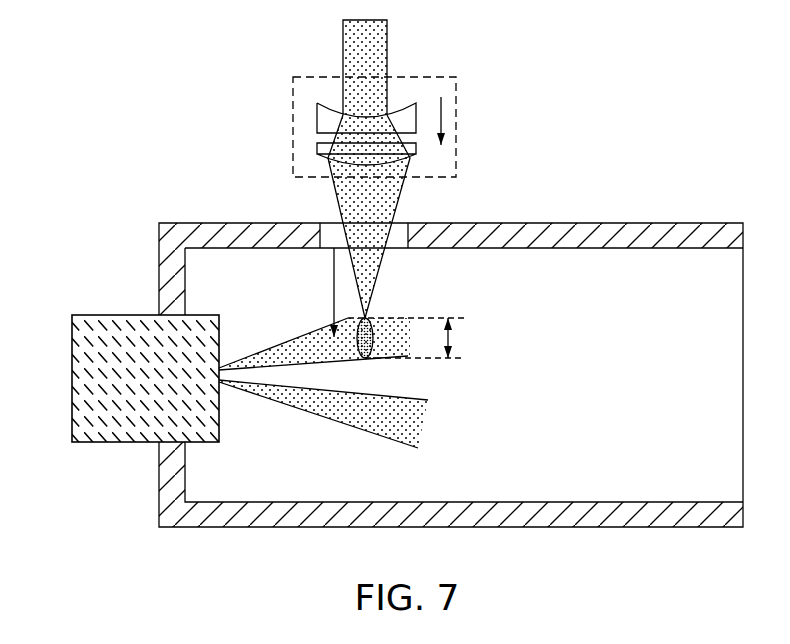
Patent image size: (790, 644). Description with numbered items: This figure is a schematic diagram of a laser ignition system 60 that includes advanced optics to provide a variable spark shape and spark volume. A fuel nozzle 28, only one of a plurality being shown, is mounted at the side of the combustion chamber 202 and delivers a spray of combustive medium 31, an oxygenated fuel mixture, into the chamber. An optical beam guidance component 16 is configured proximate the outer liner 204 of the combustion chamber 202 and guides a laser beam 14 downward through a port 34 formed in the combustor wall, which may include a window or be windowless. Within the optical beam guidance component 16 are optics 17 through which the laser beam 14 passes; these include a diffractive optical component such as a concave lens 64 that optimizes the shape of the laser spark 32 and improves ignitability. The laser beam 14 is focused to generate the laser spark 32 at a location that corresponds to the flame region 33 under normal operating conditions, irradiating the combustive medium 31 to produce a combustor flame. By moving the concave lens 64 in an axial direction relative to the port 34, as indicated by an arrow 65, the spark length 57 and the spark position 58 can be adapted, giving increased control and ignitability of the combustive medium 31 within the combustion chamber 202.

The laser beam 14 is at (386, 30).
The optical beam guidance component 16 is at (473, 143).
The optics 17 is at (317, 150).
The fuel nozzle 28 is at (72, 378).
The combustive medium 31 is at (343, 427).
The laser spark 32 is at (366, 318).
The flame region 33 is at (368, 362).
The port 34 is at (328, 228).
The spark length 57 is at (450, 338).
The spark position 58 is at (333, 278).
The laser ignition system 60 is at (613, 95).
The concave lens 64 is at (317, 112).
The arrow 65 is at (441, 112).
The combustion chamber 202 is at (615, 402).
The outer liner 204 is at (663, 222).